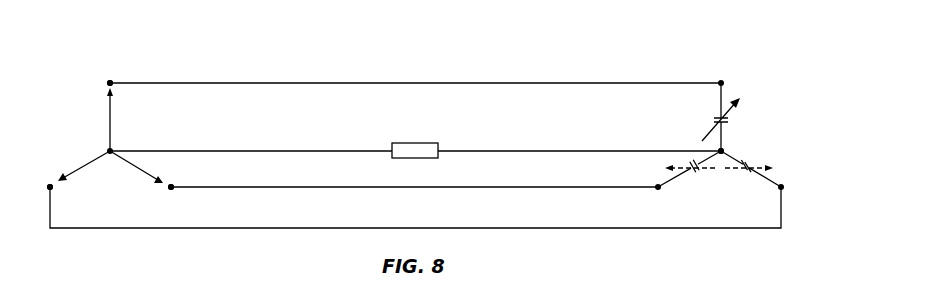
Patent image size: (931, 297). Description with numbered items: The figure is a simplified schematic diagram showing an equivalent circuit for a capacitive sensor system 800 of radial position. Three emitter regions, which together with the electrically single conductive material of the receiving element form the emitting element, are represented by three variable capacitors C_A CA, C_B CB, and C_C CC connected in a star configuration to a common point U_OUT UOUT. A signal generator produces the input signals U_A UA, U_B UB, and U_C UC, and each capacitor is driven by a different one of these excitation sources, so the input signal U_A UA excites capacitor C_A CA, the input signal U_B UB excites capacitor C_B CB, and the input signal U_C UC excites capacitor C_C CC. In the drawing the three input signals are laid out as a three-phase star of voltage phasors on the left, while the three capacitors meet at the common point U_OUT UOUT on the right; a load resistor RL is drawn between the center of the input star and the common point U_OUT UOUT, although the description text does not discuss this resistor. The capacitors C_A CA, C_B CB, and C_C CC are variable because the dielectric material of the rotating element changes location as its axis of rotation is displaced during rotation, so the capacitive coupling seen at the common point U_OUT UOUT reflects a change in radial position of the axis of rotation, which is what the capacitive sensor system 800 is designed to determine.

The capacitive sensor system 800 is at (811, 64).
The load resistor RL is at (415, 141).
The variable capacitor C_A CA is at (728, 119).
The variable capacitor C_B CB is at (689, 174).
The variable capacitor C_C CC is at (751, 174).
The common point U_OUT UOUT is at (721, 151).
The input signal U_A UA is at (98, 84).
The input signal U_B UB is at (184, 178).
The input signal U_C UC is at (39, 193).